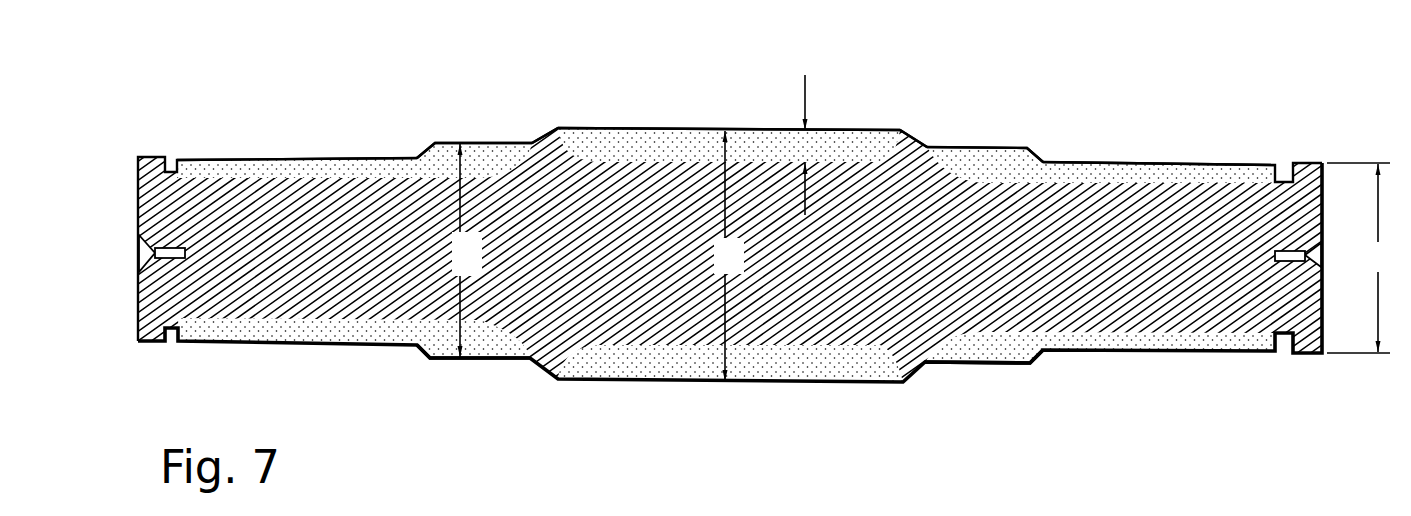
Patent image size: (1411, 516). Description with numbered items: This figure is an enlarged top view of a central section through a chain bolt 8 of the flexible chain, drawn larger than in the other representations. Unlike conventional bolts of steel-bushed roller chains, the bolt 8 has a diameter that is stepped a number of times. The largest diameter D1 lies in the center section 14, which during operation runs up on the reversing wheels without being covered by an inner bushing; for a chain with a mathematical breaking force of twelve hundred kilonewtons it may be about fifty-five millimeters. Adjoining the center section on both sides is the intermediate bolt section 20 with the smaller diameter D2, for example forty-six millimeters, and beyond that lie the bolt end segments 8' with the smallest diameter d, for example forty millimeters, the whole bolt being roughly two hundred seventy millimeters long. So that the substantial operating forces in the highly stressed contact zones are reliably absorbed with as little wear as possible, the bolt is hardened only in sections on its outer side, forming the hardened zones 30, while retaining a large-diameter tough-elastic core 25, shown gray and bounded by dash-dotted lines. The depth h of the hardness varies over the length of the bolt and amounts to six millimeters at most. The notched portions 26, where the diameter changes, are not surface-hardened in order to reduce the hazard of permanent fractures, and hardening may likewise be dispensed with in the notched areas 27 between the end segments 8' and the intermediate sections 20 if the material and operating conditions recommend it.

The bolt 8 is at (730, 218).
The bolt end segment 8' is at (726, 123).
The center section 14 is at (752, 122).
The intermediate bolt section 20 is at (444, 140).
The tough-elastic core 25 is at (317, 285).
The notched portion 26 is at (536, 130).
The notched area 27 is at (416, 357).
The hardened zone 30 is at (312, 168).
The diameter of the center section D1 is at (729, 256).
The diameter of the intermediate bolt section D2 is at (467, 250).
The depth of the hardness h is at (805, 93).
The diameter of the bolt end segments d is at (1358, 258).